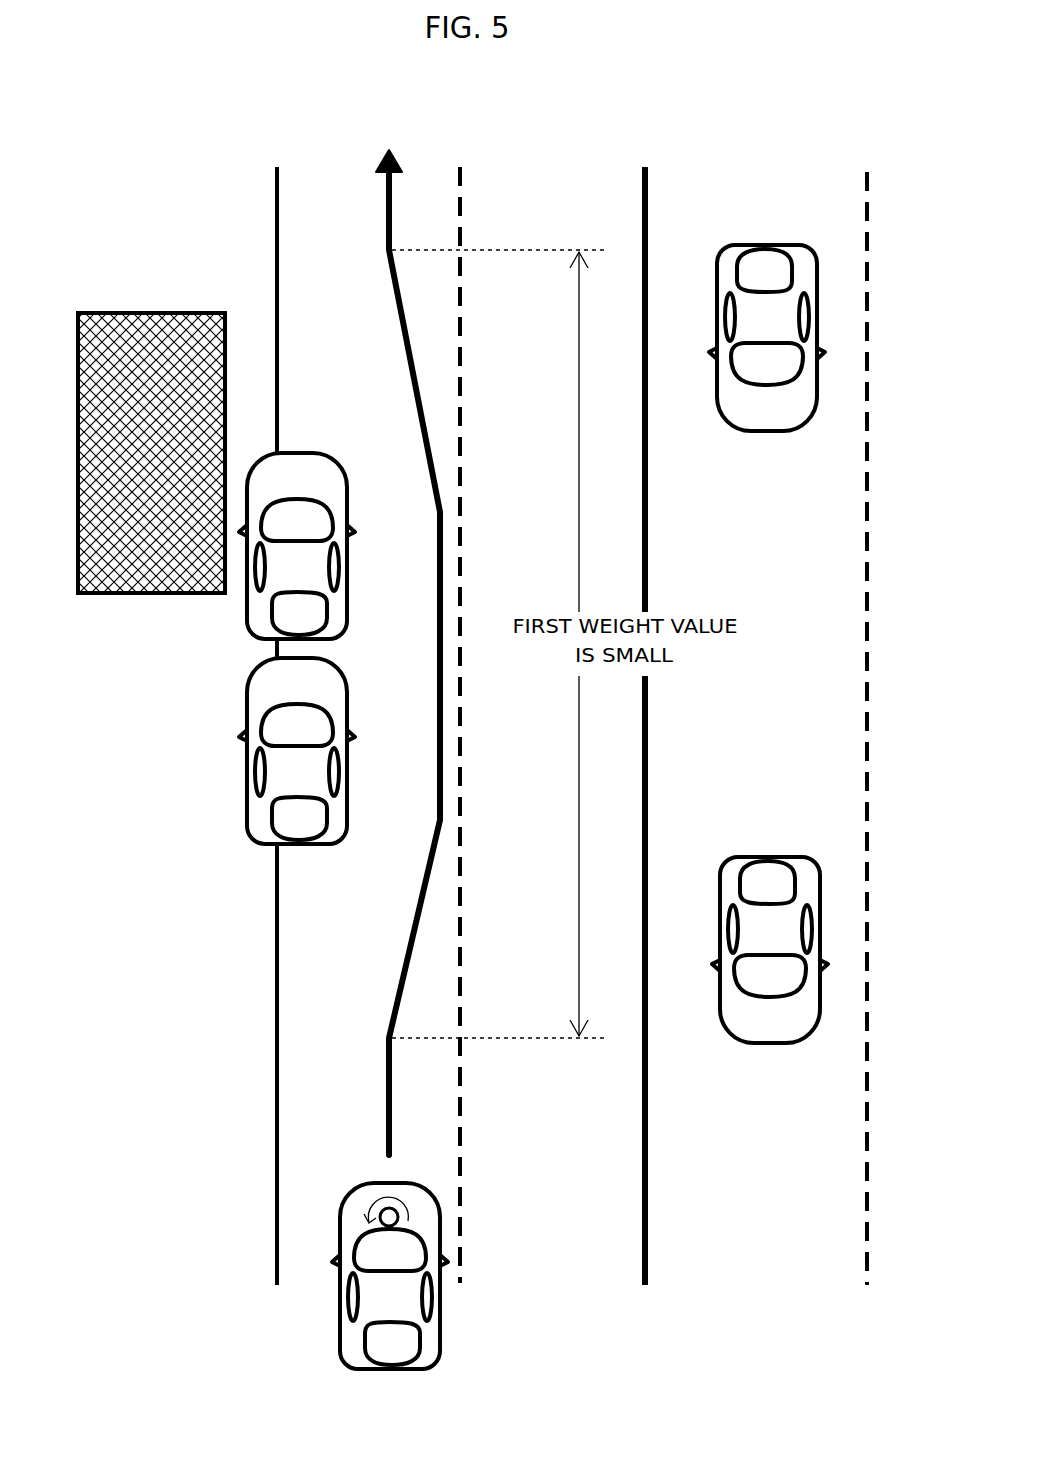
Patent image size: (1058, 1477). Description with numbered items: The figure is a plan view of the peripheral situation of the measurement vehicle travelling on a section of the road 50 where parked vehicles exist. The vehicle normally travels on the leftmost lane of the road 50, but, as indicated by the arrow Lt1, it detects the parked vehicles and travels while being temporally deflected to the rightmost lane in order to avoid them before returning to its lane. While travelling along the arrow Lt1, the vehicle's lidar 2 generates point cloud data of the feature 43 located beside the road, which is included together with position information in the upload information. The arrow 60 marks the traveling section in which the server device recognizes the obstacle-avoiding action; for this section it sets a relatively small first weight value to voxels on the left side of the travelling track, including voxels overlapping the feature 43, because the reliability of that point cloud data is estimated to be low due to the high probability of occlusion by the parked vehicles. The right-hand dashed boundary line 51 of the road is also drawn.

The lidar 2 is at (393, 1212).
The feature 43 is at (150, 595).
The road 50 is at (541, 171).
The lane boundary line 51 is at (826, 172).
The arrow indicating traveling section 60 is at (578, 360).
The arrow indicating travelling track Lt1 is at (445, 512).